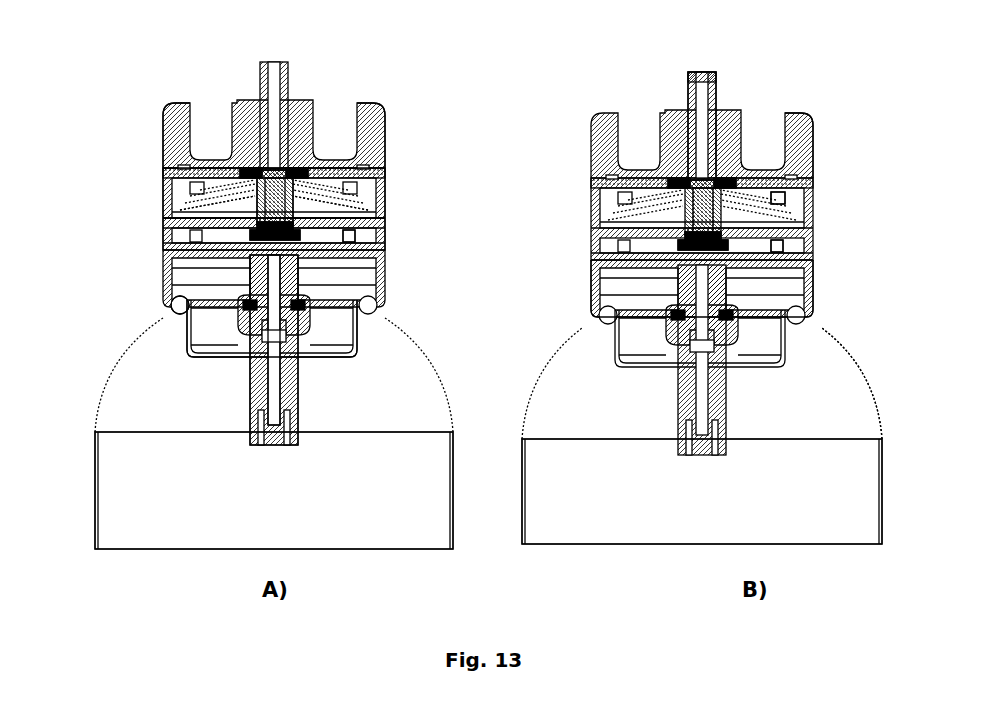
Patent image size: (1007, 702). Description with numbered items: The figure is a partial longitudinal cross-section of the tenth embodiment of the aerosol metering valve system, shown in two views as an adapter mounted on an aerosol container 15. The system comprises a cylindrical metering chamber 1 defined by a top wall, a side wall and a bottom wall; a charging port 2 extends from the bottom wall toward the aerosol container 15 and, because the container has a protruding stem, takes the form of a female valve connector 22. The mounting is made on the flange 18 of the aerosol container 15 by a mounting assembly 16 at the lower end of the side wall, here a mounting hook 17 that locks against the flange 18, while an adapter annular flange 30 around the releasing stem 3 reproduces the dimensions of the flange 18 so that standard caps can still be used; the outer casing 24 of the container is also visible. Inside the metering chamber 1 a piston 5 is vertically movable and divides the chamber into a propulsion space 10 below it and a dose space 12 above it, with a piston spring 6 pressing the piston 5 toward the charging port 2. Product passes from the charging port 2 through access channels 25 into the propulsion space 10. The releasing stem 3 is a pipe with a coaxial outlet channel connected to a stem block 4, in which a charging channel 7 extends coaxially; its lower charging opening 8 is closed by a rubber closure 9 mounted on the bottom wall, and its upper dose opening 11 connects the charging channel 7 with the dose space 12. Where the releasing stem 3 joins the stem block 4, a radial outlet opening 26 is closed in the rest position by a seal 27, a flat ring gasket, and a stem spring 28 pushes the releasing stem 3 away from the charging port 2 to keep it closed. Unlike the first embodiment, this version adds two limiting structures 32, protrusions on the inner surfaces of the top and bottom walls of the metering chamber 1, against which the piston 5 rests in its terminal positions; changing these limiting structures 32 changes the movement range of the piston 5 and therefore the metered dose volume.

The metering chamber 1 is at (386, 190).
The charging port 2 is at (302, 266).
The releasing stem 3 is at (690, 87).
The stem block 4 is at (303, 190).
The piston 5 is at (362, 222).
The piston spring 6 is at (665, 195).
The charging channel 7 is at (697, 213).
The charging opening 8 is at (298, 221).
The closure 9 is at (687, 245).
The propulsion space 10 is at (797, 235).
The dose opening 11 is at (305, 172).
The dose space 12 is at (185, 190).
The aerosol container 15 is at (100, 389).
The mounting assembly 16 is at (822, 332).
The mounting hook 17 is at (166, 315).
The flange 18 is at (166, 297).
The female valve connector 22 is at (305, 268).
The outer casing 24 is at (882, 440).
The access channels 25 is at (272, 230).
The outlet opening 26 is at (783, 207).
The seal 27 is at (715, 180).
The stem spring 28 is at (243, 170).
The adapter annular flange 30 is at (802, 120).
The limiting structure 32 is at (355, 237).